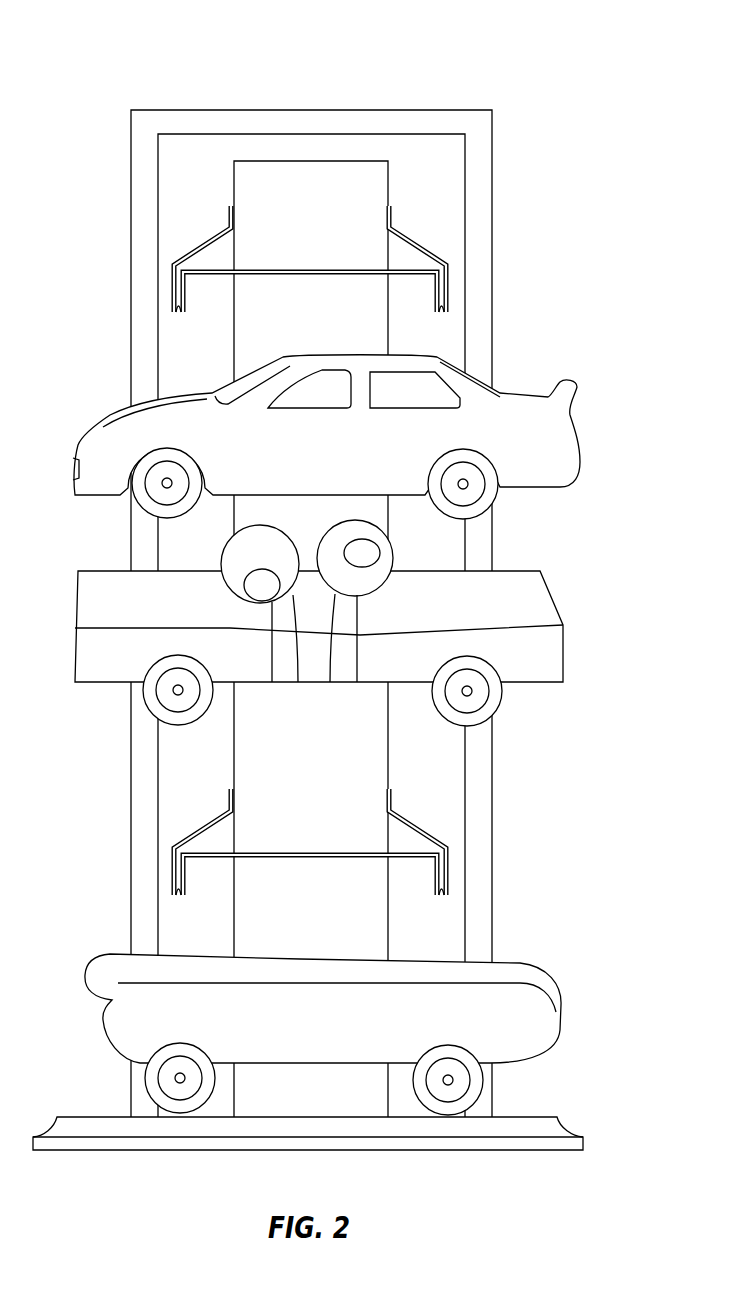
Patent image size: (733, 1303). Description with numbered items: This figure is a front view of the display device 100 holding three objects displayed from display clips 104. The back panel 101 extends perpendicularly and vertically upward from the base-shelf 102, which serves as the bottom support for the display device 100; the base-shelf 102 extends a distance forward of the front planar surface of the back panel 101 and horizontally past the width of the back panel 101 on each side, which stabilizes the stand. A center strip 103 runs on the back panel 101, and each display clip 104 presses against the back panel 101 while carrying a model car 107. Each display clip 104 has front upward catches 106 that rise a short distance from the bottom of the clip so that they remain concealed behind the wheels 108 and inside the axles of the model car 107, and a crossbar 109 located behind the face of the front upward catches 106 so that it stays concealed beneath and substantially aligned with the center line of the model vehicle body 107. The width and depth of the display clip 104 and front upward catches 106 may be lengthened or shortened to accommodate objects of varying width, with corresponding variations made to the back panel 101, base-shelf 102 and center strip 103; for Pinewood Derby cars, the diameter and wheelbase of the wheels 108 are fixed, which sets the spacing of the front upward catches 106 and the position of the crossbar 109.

The display device 100 is at (137, 73).
The back panel 101 is at (478, 157).
The base-shelf 102 is at (522, 1125).
The center strip 103 is at (370, 743).
The display clip 104 is at (449, 270).
The front upward catches 106 is at (446, 298).
The model car 107 is at (525, 450).
The wheels 108 is at (497, 693).
The crossbar 109 is at (365, 857).